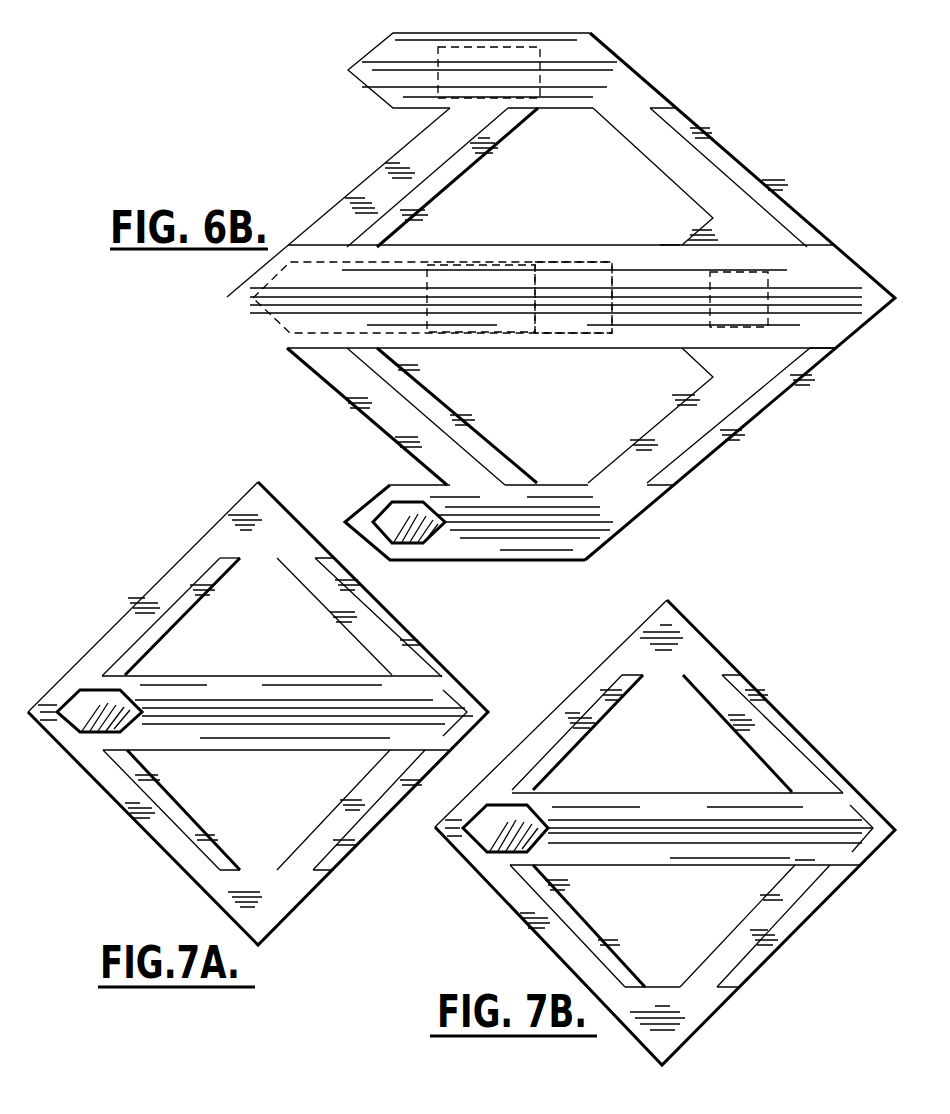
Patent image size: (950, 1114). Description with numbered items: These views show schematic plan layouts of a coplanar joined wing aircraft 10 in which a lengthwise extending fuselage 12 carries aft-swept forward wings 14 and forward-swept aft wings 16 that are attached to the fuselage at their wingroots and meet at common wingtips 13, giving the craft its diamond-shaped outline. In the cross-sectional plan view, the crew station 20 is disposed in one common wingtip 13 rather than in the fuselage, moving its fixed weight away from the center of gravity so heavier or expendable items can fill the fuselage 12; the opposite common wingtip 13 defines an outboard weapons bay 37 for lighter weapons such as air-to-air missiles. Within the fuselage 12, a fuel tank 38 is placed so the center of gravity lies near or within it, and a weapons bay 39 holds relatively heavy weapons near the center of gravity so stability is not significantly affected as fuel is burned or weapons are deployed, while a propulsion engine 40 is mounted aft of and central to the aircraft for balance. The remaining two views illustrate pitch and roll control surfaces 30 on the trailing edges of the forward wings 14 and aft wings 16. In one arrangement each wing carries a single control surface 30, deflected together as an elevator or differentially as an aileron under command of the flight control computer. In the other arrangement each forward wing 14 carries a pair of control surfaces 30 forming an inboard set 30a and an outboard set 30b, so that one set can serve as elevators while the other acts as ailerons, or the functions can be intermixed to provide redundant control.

In FIG. 6B, the joined wing aircraft 10 is at (712, 92).
In FIG. 7A, the joined wing aircraft 10 is at (146, 550).
In FIG. 7B, the joined wing aircraft 10 is at (665, 826).
In FIG. 6B, the fuselage 12 is at (480, 258).
In FIG. 7A, the fuselage 12 is at (258, 690).
In FIG. 7B, the fuselage 12 is at (687, 818).
In FIG. 6B, the common wingtip 13 is at (567, 65).
In FIG. 7A, the common wingtip 13 is at (248, 503).
In FIG. 7B, the common wingtip 13 is at (662, 630).
In FIG. 6B, the forward wing 14 is at (392, 178).
In FIG. 7A, the forward wing 14 is at (148, 610).
In FIG. 7B, the forward wing 14 is at (567, 720).
In FIG. 6B, the aft wing 16 is at (640, 150).
In FIG. 7A, the aft wing 16 is at (362, 630).
In FIG. 7B, the aft wing 16 is at (748, 722).
In FIG. 6B, the crew station 20 is at (398, 514).
In FIG. 7A, the crew station 20 is at (82, 733).
In FIG. 7B, the crew station 20 is at (537, 818).
In FIG. 6B, the pitch and roll control surfaces 30 is at (690, 132).
In FIG. 7A, the pitch and roll control surfaces 30 is at (166, 612).
In FIG. 7B, the inboard set of control surfaces 30a is at (577, 740).
In FIG. 7B, the outboard set of control surfaces 30b is at (603, 700).
In FIG. 6B, the outboard weapons bay 37 is at (528, 60).
In FIG. 6B, the fuel tank 38 is at (390, 280).
In FIG. 6B, the weapons bay 39 is at (535, 288).
In FIG. 6B, the propulsion engine 40 is at (766, 272).